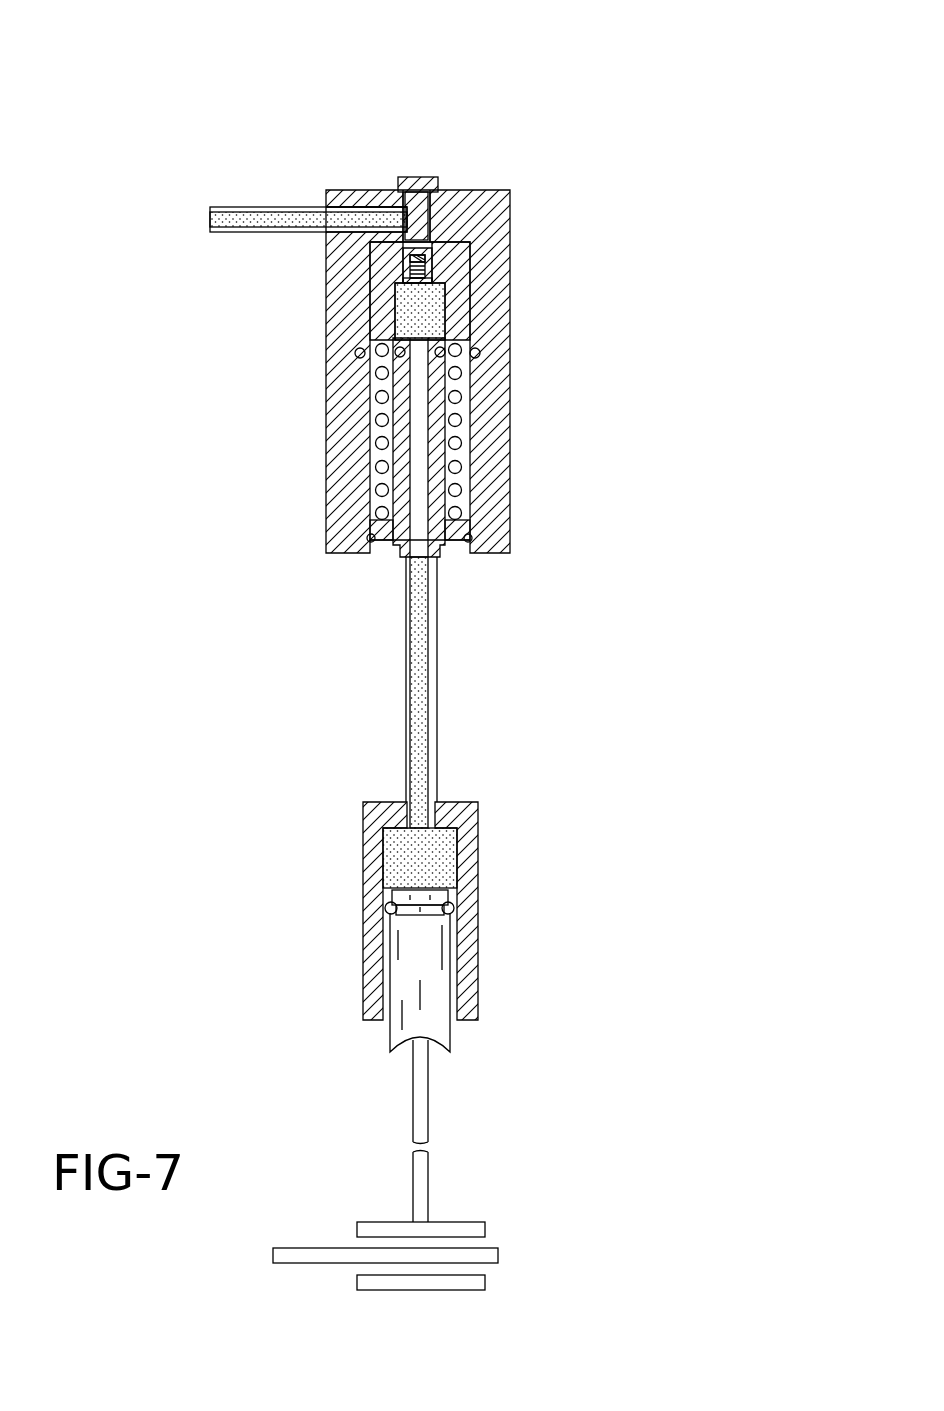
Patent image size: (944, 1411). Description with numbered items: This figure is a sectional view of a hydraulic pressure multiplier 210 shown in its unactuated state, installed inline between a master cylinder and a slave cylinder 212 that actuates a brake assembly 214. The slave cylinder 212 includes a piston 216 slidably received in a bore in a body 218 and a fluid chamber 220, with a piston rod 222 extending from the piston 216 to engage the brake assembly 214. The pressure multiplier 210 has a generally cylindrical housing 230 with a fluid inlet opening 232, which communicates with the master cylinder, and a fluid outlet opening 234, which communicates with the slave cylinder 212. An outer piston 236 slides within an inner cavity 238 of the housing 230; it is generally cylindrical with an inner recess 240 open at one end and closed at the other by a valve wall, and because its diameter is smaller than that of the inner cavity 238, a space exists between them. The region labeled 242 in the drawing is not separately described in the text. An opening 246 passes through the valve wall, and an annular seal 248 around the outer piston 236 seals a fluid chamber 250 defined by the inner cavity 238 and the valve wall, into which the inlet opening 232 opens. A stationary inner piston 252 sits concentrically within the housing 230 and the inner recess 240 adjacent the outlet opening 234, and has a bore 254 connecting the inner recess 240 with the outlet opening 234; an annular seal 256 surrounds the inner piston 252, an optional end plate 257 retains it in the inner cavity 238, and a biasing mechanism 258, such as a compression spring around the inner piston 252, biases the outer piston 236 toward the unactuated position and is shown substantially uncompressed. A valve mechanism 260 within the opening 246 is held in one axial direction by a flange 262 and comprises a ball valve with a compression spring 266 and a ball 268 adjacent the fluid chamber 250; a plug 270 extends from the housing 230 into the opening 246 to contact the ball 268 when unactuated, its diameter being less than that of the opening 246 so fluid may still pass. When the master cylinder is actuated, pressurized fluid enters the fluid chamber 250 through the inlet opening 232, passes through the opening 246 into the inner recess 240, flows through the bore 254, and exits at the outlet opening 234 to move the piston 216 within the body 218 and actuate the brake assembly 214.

The hydraulic pressure multiplier 210 is at (172, 118).
The slave cylinder 212 is at (483, 867).
The brake assembly 214 is at (505, 1240).
The piston 216 is at (440, 1028).
The body 218 is at (374, 955).
The fluid chamber 220 is at (412, 873).
The piston rod 222 is at (415, 1118).
The housing 230 is at (493, 487).
The fluid inlet opening 232 is at (315, 197).
The fluid outlet opening 234 is at (442, 563).
The outer piston 236 is at (478, 333).
The inner cavity 238 is at (372, 436).
The inner recess 240 is at (422, 304).
The inner block 242 is at (453, 323).
The opening 246 is at (437, 218).
The annular seal 248 is at (475, 357).
The fluid chamber 250 is at (363, 225).
The inner piston 252 is at (398, 460).
The bore 254 is at (417, 483).
The annular seal 256 is at (397, 352).
The end plate 257 is at (375, 540).
The biasing mechanism 258 is at (455, 490).
The valve mechanism 260 is at (432, 255).
The flange 262 is at (428, 270).
The compression spring 266 is at (408, 278).
The ball 268 is at (420, 268).
The plug 270 is at (398, 188).